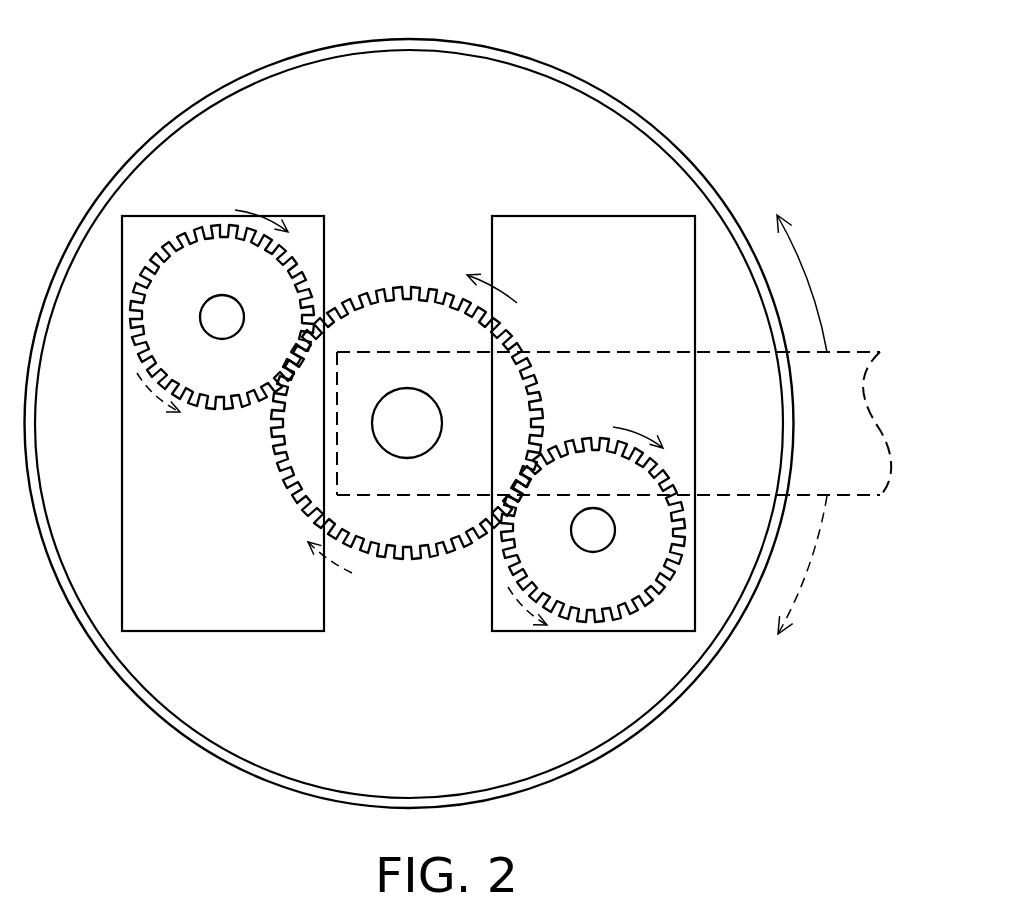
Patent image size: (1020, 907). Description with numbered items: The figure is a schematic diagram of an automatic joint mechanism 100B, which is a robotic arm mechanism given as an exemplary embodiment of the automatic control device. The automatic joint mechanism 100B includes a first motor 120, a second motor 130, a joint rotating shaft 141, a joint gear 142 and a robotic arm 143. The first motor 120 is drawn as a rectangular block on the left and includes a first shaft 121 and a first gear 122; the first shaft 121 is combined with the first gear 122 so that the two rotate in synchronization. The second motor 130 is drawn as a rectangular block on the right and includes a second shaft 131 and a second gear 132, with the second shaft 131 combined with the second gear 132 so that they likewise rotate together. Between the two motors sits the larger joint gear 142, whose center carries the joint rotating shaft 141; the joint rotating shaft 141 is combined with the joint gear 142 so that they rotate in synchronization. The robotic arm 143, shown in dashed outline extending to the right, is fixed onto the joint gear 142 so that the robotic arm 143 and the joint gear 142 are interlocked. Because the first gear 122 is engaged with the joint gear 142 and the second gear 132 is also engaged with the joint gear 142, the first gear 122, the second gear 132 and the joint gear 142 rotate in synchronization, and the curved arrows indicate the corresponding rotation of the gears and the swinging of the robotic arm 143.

The automatic joint mechanism 100B is at (203, 103).
The first motor 120 is at (298, 215).
The first shaft 121 is at (225, 318).
The first gear 122 is at (163, 355).
The second motor 130 is at (543, 215).
The second shaft 131 is at (593, 538).
The second gear 132 is at (570, 573).
The joint rotating shaft 141 is at (410, 433).
The joint gear 142 is at (395, 533).
The robotic arm 143 is at (864, 352).